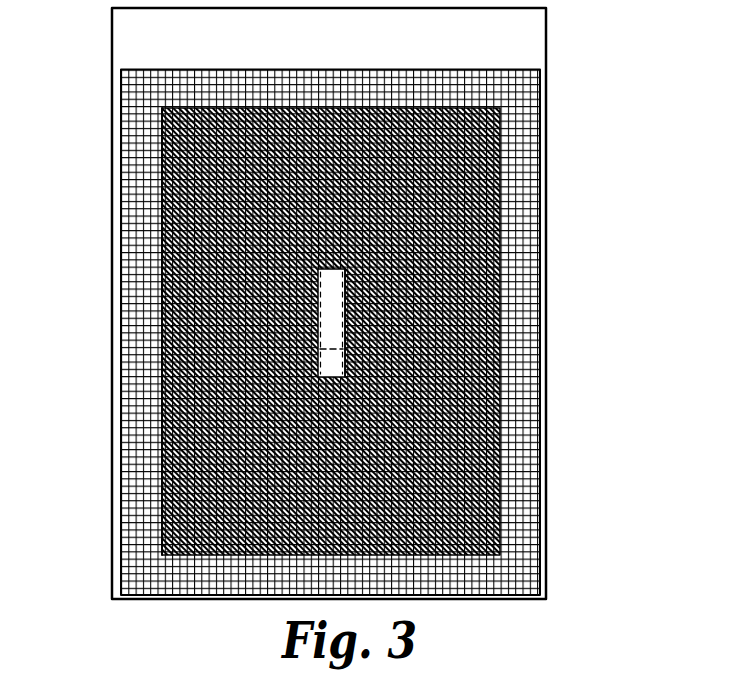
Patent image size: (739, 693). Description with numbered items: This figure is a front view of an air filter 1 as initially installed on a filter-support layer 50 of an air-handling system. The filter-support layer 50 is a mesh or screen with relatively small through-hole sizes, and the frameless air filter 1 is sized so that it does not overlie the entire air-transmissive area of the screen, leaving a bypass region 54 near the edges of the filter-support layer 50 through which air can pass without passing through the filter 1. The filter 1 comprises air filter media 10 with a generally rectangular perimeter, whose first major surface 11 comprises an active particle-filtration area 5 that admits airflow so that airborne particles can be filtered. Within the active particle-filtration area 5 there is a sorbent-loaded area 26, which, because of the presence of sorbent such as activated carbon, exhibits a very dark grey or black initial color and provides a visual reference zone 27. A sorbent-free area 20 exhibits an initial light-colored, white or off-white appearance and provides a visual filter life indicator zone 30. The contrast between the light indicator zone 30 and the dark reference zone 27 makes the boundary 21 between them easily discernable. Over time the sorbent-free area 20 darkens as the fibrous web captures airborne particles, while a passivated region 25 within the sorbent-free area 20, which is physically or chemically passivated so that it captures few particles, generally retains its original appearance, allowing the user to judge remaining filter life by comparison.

The air filter 1 is at (246, 116).
The active particle-filtration area 5 is at (280, 245).
The air filter media 10 is at (372, 186).
The first major surface 11 is at (425, 235).
The sorbent-free area 20 is at (328, 314).
The boundary 21 is at (346, 324).
The passivated region 25 is at (327, 369).
The sorbent-loaded area 26 is at (177, 463).
The visual reference zone 27 is at (177, 492).
The visual filter life indicator zone 30 is at (333, 292).
The filter-support layer 50 is at (125, 32).
The bypass region 54 is at (473, 573).